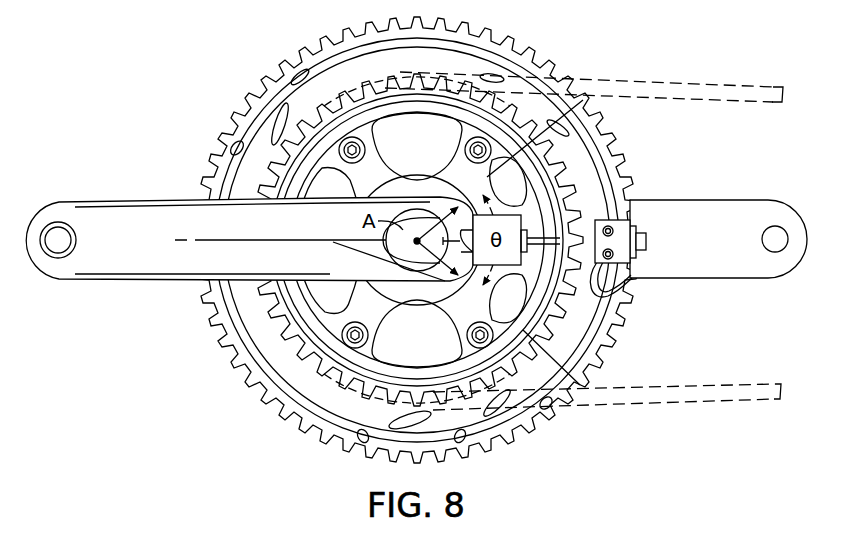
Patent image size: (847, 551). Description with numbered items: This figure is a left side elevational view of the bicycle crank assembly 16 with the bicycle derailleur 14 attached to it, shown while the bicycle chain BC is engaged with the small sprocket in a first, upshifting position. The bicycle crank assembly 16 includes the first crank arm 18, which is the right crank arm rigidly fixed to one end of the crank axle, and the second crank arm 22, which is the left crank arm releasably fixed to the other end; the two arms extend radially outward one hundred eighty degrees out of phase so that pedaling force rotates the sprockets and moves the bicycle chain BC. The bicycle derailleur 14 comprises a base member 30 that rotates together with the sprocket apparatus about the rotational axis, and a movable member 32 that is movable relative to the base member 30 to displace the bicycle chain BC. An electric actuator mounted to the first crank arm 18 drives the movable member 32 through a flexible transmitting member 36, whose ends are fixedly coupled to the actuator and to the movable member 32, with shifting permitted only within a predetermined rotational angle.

The bicycle derailleur 14 is at (650, 258).
The bicycle crank assembly 16 is at (425, 239).
The first crank arm 18 is at (738, 284).
The second crank arm 22 is at (96, 284).
The base member 30 is at (602, 215).
The movable member 32 is at (650, 236).
The transmitting member 36 is at (608, 322).
The bicycle chain BC is at (727, 87).